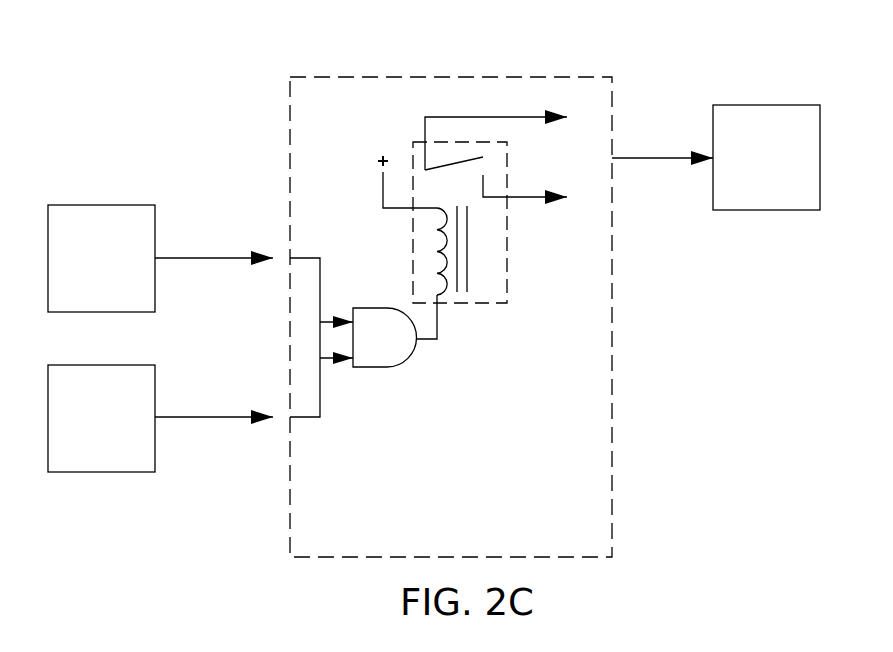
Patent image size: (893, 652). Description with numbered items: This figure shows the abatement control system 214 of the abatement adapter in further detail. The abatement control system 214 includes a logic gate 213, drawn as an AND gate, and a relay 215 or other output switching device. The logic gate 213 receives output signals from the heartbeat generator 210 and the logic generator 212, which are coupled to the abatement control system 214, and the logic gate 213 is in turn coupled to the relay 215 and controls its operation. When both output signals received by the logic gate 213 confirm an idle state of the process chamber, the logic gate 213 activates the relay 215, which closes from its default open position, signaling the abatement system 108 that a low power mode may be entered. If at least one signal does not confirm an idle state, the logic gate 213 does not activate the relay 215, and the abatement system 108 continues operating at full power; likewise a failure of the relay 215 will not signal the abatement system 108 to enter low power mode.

The abatement system 108 is at (748, 170).
The heartbeat generator 210 is at (83, 272).
The logic generator 212 is at (83, 432).
The logic gate 213 is at (377, 368).
The abatement control system 214 is at (612, 325).
The relay 215 is at (484, 327).